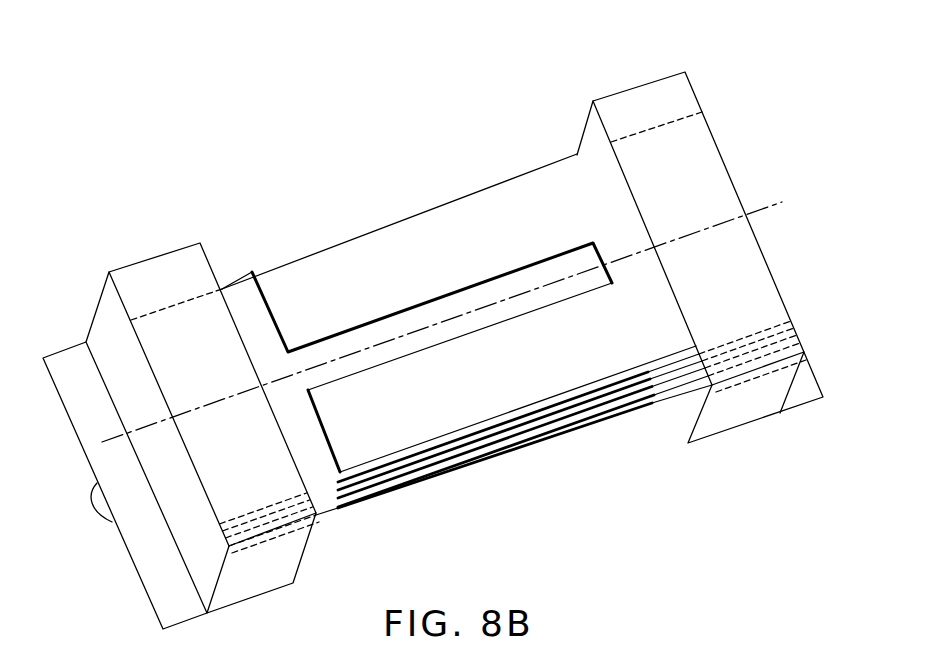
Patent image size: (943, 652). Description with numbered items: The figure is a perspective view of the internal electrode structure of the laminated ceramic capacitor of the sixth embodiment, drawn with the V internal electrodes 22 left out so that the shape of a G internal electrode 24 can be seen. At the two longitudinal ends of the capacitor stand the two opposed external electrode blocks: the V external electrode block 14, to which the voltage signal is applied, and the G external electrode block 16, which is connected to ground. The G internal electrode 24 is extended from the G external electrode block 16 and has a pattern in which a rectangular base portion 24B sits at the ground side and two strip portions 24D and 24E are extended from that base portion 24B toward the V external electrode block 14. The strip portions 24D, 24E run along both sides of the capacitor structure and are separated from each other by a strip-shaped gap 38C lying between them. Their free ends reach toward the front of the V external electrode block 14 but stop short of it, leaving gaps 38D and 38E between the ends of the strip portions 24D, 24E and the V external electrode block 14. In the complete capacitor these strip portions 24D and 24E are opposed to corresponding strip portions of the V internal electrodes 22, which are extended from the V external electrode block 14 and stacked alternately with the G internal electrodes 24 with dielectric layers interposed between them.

The V external electrode block 14 is at (152, 268).
The G external electrode block 16 is at (643, 98).
The V internal electrode 22 is at (315, 468).
The G internal electrode 24 is at (519, 187).
The rectangular base portion 24B is at (730, 257).
The strip portion 24D is at (293, 268).
The strip portion 24E is at (475, 407).
The strip-shaped gap 38C is at (437, 313).
The gap 38D is at (265, 332).
The gap 38E is at (308, 445).